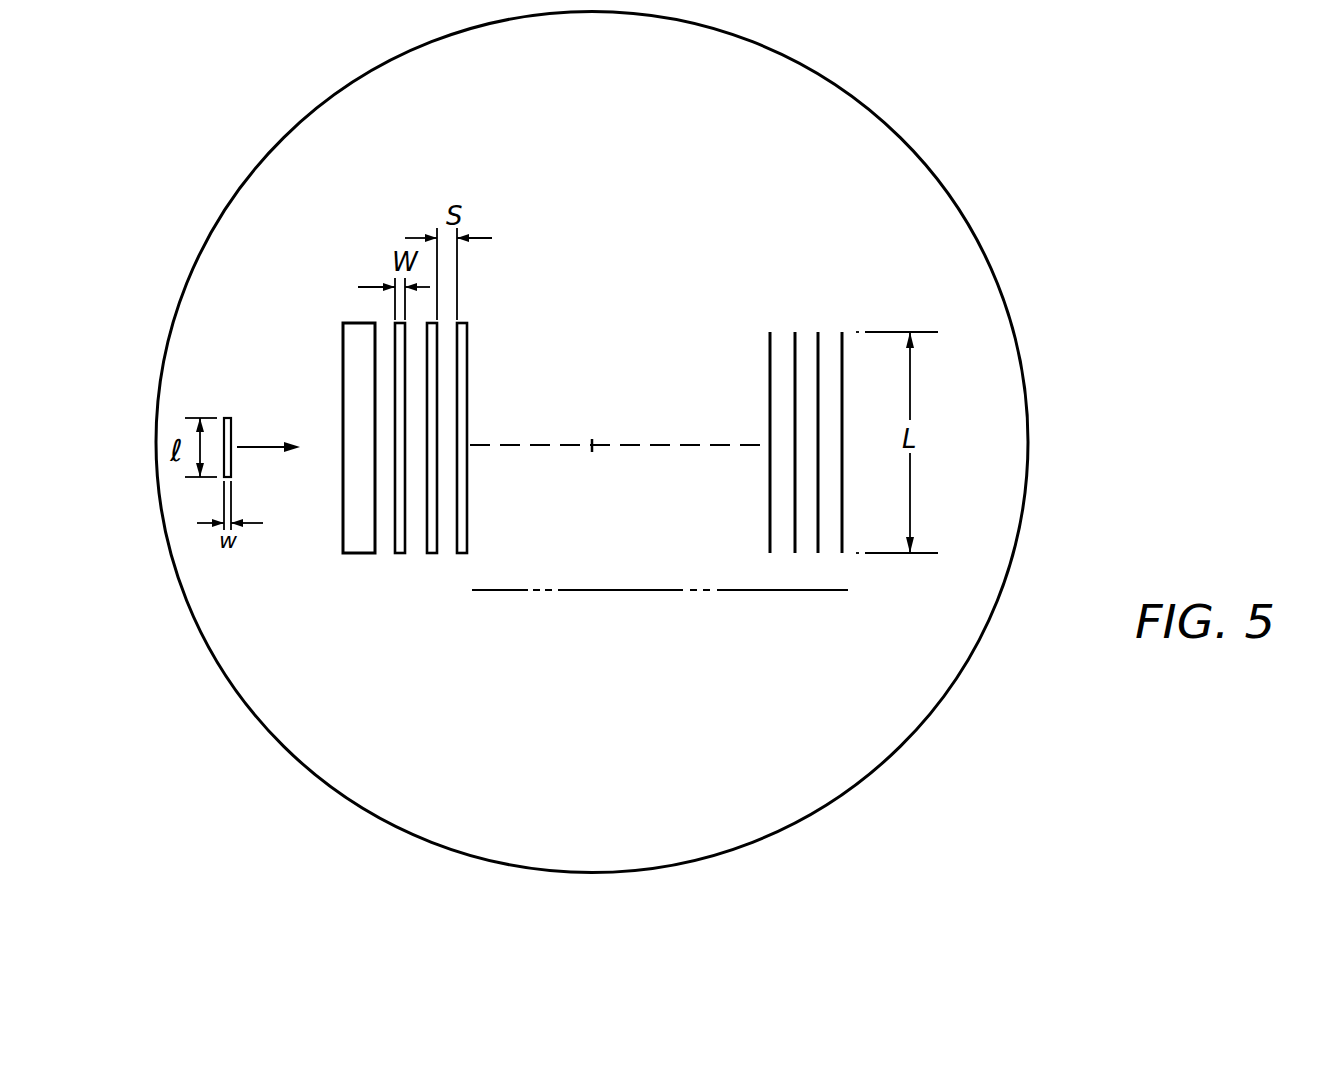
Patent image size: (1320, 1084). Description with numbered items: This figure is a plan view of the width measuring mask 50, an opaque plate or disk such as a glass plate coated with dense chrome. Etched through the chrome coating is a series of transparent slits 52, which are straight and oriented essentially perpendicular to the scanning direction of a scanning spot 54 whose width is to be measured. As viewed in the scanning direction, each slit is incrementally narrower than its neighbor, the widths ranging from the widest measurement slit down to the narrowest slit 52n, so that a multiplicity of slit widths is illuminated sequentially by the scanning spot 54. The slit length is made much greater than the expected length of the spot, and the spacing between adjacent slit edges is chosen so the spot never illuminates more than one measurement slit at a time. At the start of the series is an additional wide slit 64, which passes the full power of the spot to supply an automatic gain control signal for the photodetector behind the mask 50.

The width measuring mask 50 is at (953, 650).
The scanning spot 54 is at (230, 418).
The wide slit 64 is at (357, 553).
The slits 52 is at (398, 553).
The narrowest slit 52n is at (840, 553).